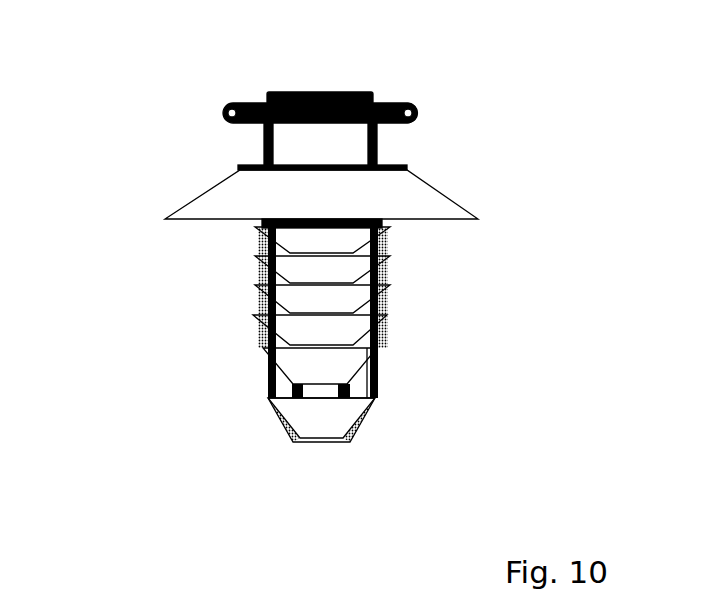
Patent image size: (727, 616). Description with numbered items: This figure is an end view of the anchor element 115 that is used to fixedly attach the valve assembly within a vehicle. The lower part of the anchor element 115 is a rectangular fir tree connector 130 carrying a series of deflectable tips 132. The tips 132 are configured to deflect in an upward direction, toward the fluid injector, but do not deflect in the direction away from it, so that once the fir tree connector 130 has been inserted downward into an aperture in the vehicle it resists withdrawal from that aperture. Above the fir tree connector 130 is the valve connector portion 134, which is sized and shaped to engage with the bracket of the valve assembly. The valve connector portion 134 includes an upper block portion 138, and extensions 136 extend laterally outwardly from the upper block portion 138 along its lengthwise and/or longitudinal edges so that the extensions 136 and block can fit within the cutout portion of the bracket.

The anchor element 115 is at (88, 38).
The rectangular fir tree connector 130 is at (199, 290).
The deflectable tips 132 is at (388, 286).
The valve connector portion 134 is at (491, 59).
The extensions 136 is at (411, 104).
The upper block portion 138 is at (350, 157).